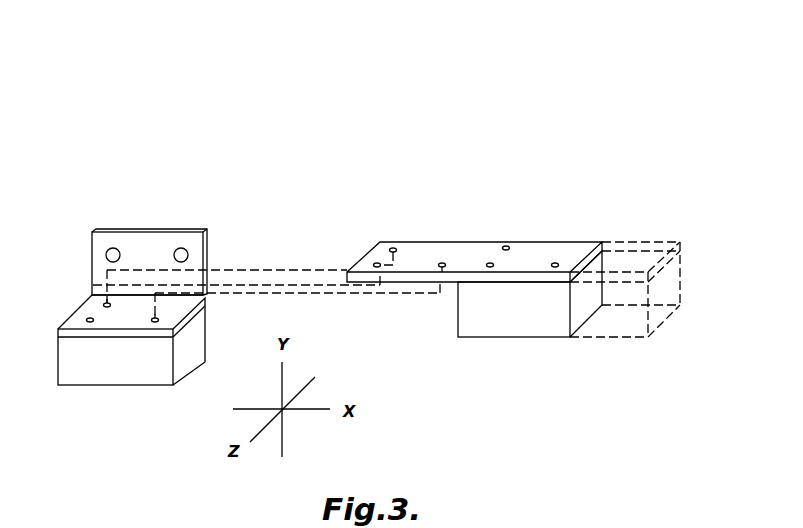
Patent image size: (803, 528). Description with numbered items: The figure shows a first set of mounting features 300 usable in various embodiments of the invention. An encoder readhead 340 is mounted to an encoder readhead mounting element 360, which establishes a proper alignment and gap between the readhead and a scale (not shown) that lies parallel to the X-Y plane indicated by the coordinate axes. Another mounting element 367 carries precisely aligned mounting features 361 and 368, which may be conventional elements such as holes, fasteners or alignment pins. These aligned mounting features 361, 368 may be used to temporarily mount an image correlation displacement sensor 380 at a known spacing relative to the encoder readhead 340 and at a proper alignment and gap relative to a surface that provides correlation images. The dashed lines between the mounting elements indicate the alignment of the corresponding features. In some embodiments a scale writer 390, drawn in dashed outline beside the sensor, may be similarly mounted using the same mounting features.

The first set of mounting features 300 is at (640, 126).
The encoder readhead 340 is at (132, 385).
The encoder readhead mounting element 360 is at (172, 230).
The aligned mounting features 361 is at (152, 320).
The mounting element 367 is at (425, 242).
The aligned mounting features 368 is at (489, 263).
The image correlation displacement sensor 380 is at (508, 338).
The scale writer 390 is at (610, 338).